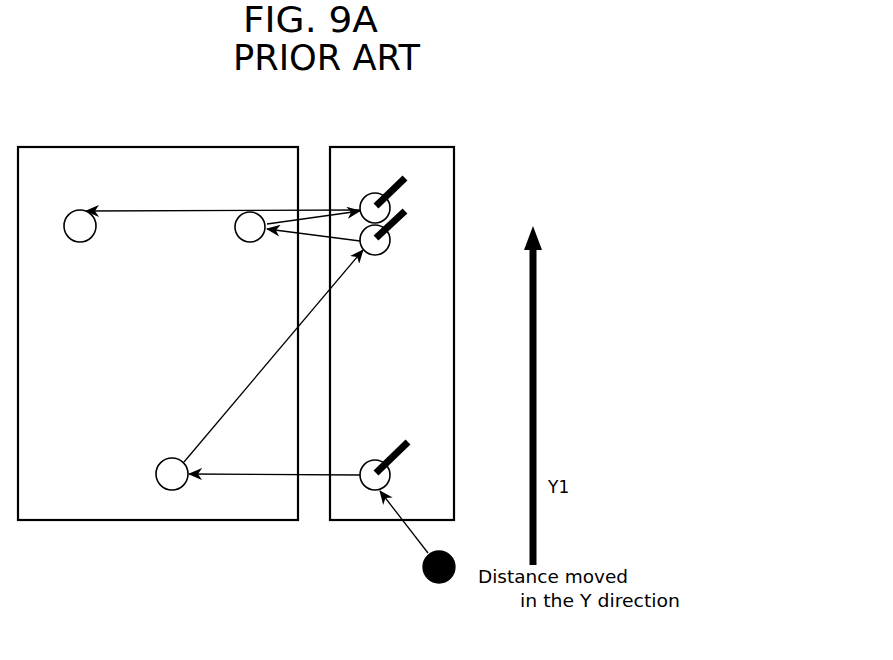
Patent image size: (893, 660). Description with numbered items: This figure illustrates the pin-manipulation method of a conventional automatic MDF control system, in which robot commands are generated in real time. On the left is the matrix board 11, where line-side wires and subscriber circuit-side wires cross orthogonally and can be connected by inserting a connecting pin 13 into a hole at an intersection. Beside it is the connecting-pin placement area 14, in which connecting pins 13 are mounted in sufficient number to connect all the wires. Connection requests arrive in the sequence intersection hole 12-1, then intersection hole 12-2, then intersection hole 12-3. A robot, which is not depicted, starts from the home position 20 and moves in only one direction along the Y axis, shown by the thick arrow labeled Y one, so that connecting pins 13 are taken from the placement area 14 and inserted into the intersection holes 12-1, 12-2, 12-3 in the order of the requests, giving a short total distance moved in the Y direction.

The matrix board 11 is at (158, 147).
The connecting-pin placement area 14 is at (378, 147).
The connecting pin 13 is at (412, 195).
The intersection hole 12-1 is at (172, 458).
The intersection hole 12-2 is at (247, 244).
The intersection hole 12-3 is at (81, 243).
The home position 20 is at (458, 586).